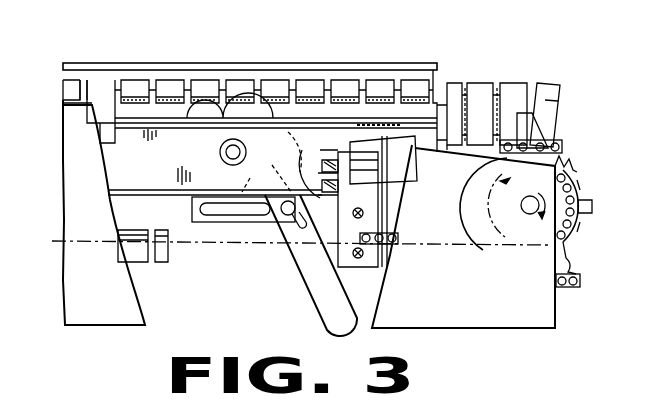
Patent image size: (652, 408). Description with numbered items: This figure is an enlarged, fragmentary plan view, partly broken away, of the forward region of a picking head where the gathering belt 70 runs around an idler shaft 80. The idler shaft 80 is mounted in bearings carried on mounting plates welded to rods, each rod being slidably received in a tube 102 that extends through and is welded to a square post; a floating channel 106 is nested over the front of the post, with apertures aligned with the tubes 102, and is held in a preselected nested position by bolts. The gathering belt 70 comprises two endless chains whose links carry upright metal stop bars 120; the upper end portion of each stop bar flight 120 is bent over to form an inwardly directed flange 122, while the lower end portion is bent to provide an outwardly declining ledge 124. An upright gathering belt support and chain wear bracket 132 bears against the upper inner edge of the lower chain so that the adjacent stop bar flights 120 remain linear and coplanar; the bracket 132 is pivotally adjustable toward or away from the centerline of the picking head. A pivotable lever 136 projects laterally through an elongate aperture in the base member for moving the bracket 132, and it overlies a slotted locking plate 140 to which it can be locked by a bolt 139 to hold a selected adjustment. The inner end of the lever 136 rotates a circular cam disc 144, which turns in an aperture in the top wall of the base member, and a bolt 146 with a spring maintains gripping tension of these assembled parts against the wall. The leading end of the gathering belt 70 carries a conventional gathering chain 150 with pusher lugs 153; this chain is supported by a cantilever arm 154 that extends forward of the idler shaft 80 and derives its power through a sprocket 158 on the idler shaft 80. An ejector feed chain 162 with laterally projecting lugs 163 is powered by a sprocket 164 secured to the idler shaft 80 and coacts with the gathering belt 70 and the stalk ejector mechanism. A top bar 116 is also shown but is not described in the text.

The gathering belt 70 is at (67, 90).
The idler shaft 80 is at (578, 226).
The tube 102 is at (332, 162).
The floating channel 106 is at (388, 176).
The top bar 116 is at (100, 66).
The stop bar 120 is at (305, 97).
The inwardly directed flange 122 is at (477, 143).
The outwardly declining ledge 124 is at (199, 84).
The gathering belt support and chain wear bracket 132 is at (140, 132).
The pivotable lever 136 is at (300, 252).
The bolt 139 is at (283, 215).
The slotted locking plate 140 is at (190, 208).
The circular cam disc 144 is at (276, 139).
The bolt 146 is at (220, 153).
The gathering chain 150 is at (562, 148).
The pusher lug 153 is at (534, 128).
The cantilever arm 154 is at (512, 320).
The sprocket 158 is at (580, 168).
The ejector feed chain 162 is at (388, 243).
The lug 163 is at (446, 140).
The sprocket 164 is at (578, 190).